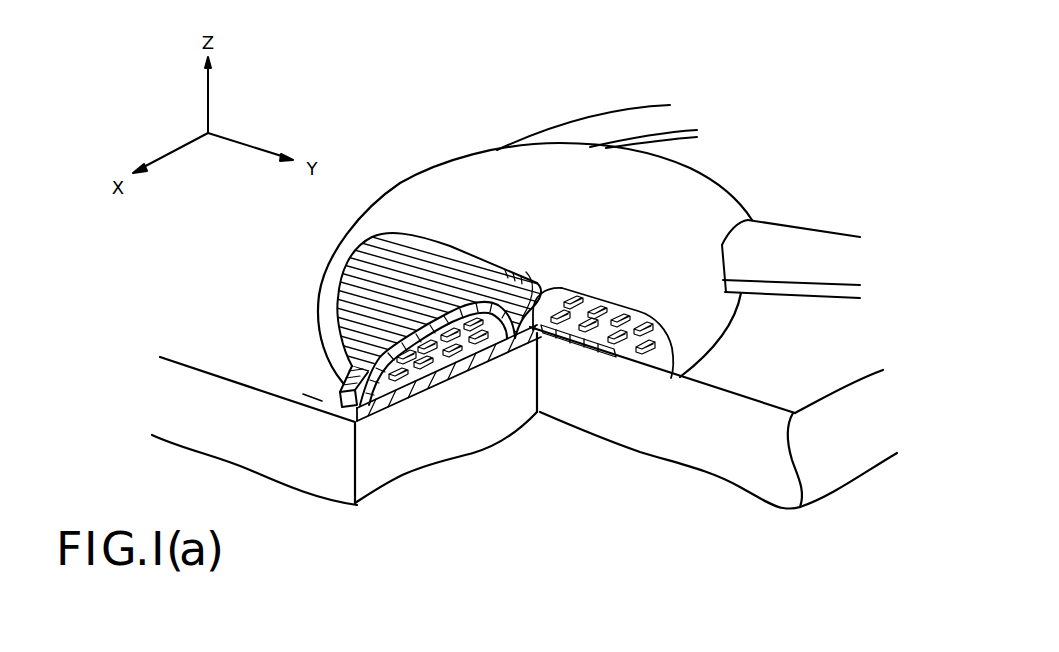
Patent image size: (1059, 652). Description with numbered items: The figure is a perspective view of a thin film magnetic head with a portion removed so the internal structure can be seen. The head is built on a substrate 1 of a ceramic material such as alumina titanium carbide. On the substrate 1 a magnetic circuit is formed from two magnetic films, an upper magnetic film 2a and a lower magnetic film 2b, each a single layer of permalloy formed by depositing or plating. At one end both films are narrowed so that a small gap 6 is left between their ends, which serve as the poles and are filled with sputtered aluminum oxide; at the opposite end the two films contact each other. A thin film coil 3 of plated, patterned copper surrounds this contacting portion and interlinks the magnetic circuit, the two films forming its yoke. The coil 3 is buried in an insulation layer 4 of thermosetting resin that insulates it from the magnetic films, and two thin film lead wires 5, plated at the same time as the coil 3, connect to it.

The substrate 1 is at (687, 452).
The upper magnetic film 2a is at (347, 272).
The lower magnetic film 2b is at (403, 395).
The thin film coil 3 is at (453, 350).
The insulation layer 4 is at (434, 178).
The lead wires 5 is at (642, 107).
The gap 6 is at (333, 404).